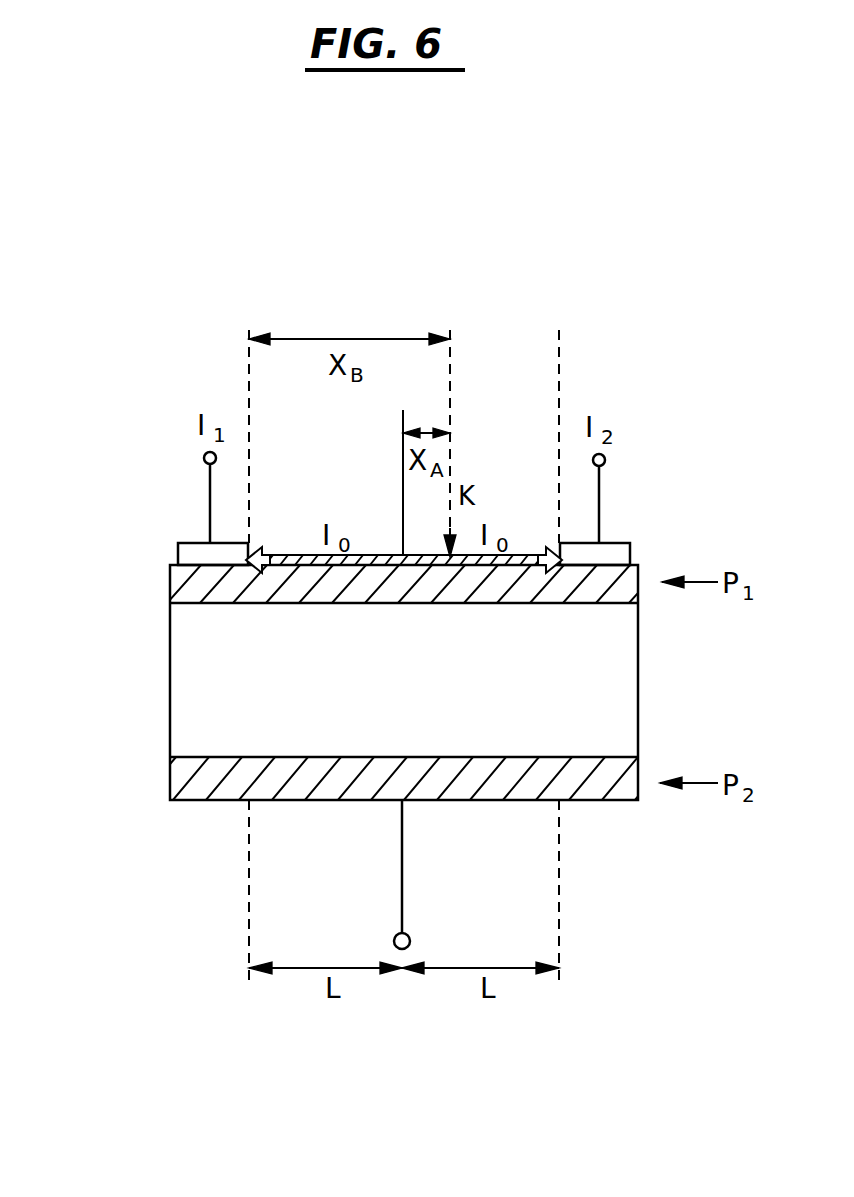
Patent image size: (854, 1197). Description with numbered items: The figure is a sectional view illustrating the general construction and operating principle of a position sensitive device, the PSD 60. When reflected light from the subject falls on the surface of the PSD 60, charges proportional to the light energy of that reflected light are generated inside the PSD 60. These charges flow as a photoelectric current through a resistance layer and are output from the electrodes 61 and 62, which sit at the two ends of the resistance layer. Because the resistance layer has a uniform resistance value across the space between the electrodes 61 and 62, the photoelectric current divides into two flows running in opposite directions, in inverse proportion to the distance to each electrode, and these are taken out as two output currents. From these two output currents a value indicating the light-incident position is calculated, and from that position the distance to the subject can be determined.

The PSD 60 is at (152, 690).
The electrode 61 is at (188, 542).
The electrode 62 is at (618, 542).